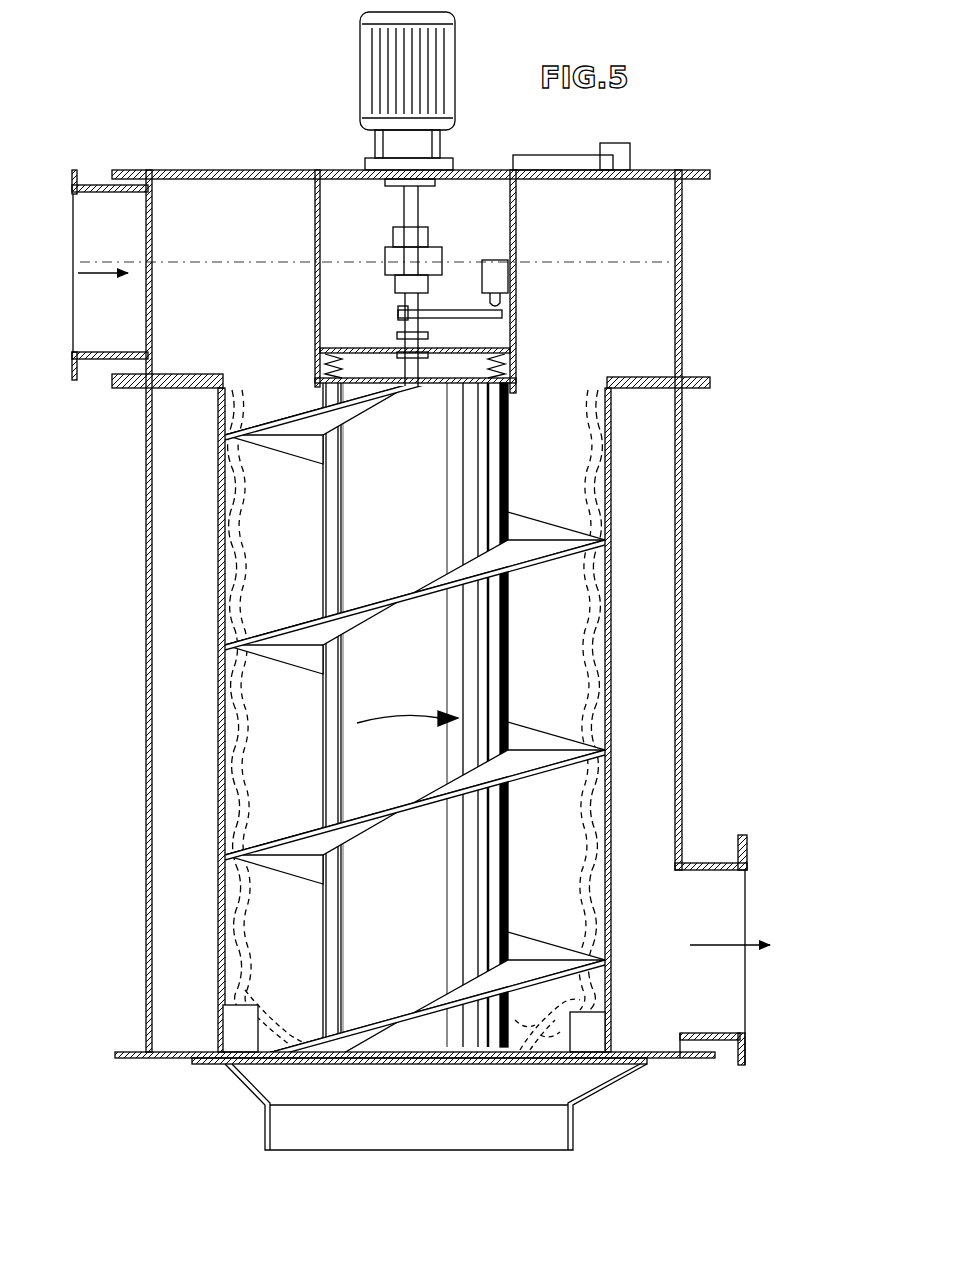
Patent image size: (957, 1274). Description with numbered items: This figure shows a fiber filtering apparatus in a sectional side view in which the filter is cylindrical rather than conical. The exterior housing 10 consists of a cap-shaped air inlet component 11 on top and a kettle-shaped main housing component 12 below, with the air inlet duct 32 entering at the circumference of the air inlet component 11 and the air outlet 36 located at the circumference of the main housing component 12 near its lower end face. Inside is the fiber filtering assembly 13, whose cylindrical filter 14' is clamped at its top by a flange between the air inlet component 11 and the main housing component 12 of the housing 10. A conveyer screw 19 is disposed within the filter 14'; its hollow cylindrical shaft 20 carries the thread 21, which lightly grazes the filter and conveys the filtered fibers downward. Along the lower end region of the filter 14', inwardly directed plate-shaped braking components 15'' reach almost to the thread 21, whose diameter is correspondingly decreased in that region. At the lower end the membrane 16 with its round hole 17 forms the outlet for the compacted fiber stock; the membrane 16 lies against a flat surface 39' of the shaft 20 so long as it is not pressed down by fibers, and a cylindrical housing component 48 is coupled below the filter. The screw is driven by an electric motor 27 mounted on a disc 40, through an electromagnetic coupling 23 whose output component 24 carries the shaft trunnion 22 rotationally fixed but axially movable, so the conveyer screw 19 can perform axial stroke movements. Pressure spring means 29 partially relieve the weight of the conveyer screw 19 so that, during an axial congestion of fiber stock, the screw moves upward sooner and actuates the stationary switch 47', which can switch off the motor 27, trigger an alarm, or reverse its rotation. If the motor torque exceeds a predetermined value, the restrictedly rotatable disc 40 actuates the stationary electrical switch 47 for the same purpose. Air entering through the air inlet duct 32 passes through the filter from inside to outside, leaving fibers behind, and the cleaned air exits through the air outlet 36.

The exterior housing 10 is at (690, 262).
The air inlet component 11 is at (201, 170).
The main housing component 12 is at (147, 780).
The fiber filtering assembly 13 is at (622, 481).
The filter 14' is at (192, 720).
The braking components 15'' is at (416, 1004).
The membrane 16 is at (315, 1064).
The hole 17 is at (500, 1060).
The conveyer screw 19 is at (520, 438).
The shaft 20 is at (488, 637).
The thread 21 is at (250, 437).
The shaft trunnion 22 is at (398, 323).
The electromagnetic coupling 23 is at (434, 256).
The output component 24 is at (405, 286).
The electric motor 27 is at (363, 34).
The pressure spring means 29 is at (516, 355).
The air inlet duct 32 is at (104, 183).
The air outlet 36 is at (728, 863).
The flat surface 39' is at (415, 1078).
The disc 40 is at (325, 170).
The electrical switch 47 is at (596, 138).
The switch 47' is at (527, 275).
The cylindrical housing component 48 is at (237, 1080).